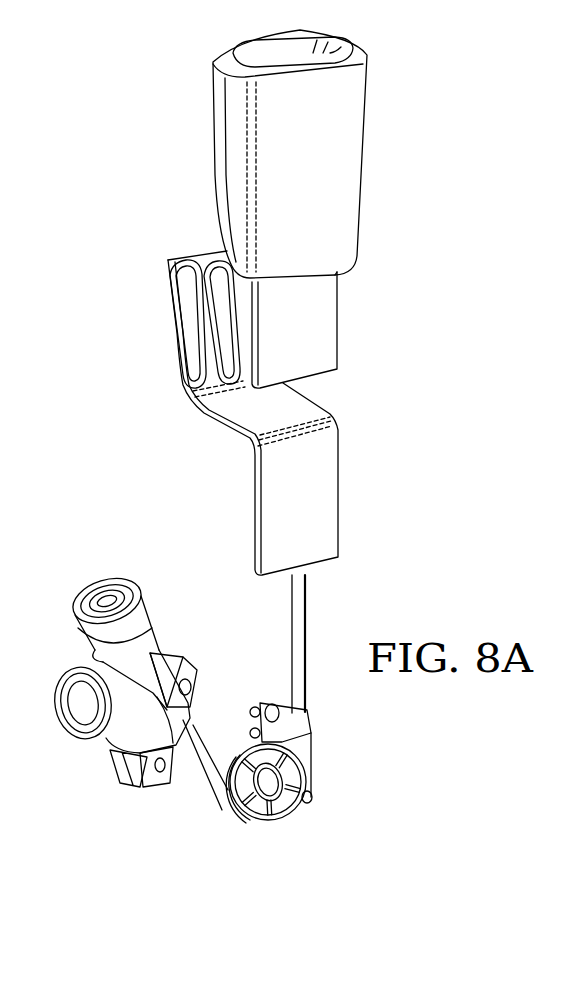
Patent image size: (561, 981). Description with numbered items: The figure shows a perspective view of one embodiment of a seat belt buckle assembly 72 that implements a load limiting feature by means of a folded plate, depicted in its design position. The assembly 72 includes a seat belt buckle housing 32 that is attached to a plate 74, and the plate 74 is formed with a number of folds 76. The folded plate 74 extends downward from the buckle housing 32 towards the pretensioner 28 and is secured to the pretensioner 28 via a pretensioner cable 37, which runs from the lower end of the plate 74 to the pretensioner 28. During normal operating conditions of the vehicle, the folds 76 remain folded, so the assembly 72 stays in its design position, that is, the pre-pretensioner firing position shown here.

The seat belt buckle assembly 72 is at (403, 107).
The seat belt buckle housing 32 is at (213, 157).
The plate 74 is at (340, 310).
The folds 76 is at (218, 363).
The pretensioner cable 37 is at (308, 622).
The pretensioner 28 is at (160, 643).